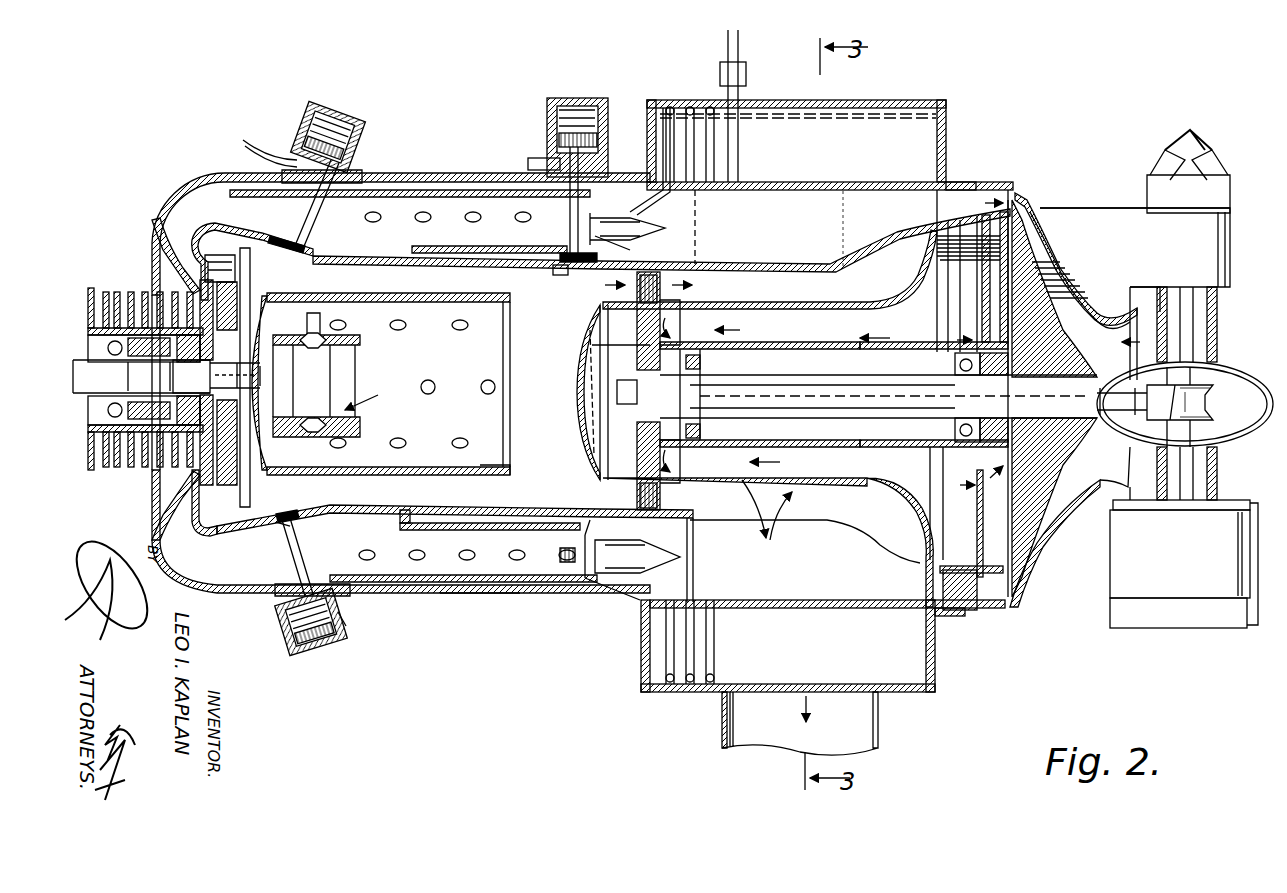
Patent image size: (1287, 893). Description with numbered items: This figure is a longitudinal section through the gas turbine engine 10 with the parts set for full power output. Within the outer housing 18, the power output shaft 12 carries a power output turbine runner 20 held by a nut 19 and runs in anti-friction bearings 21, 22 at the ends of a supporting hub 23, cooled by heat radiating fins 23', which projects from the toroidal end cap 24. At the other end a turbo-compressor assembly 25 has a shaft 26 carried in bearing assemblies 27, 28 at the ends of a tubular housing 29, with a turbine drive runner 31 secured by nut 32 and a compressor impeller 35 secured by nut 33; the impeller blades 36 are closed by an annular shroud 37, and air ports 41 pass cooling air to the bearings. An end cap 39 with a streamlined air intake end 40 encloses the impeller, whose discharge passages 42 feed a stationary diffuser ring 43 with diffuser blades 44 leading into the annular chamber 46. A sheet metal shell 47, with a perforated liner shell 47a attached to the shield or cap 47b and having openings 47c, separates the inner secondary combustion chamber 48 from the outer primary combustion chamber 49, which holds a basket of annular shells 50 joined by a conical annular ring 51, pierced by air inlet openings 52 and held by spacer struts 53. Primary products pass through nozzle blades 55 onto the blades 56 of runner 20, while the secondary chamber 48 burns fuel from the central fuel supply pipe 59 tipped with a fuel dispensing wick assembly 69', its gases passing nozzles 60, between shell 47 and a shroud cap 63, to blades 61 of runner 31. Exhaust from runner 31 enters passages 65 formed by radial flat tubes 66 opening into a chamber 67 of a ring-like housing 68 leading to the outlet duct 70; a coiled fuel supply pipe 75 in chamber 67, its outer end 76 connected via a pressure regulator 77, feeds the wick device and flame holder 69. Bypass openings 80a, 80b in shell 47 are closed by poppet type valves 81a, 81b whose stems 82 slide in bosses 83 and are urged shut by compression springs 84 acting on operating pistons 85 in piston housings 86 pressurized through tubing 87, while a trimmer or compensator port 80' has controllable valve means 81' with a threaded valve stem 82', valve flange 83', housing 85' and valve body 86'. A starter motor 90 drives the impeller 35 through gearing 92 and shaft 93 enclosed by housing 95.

The gas turbine engine 10 is at (538, 96).
The power output shaft 12 is at (141, 376).
The outer housing 18 is at (478, 594).
The nut 19 is at (236, 377).
The power output turbine runner 20 is at (200, 462).
The anti-friction bearing 21 is at (100, 340).
The anti-friction bearing 22 is at (178, 320).
The supporting hub 23 is at (145, 366).
The heat radiating fins 23' is at (94, 360).
The end cap 24 is at (168, 207).
The turbo-compressor assembly 25 is at (771, 518).
The shaft 26 is at (772, 416).
The bearing assembly 27 is at (695, 445).
The bearing assembly 28 is at (945, 455).
The tubular housing 29 is at (835, 447).
The turbine drive runner 31 is at (590, 350).
The nut 32 is at (616, 392).
The nut 33 is at (1090, 432).
The compressor impeller 35 is at (1068, 292).
The blades 36 is at (1035, 542).
The annular shroud 37 is at (1063, 255).
The end cap 39 is at (1045, 200).
The air intake end 40 is at (1112, 320).
The air ports 41 is at (680, 330).
The discharge passages 42 is at (1018, 190).
The stationary diffuser ring 43 is at (985, 200).
The diffuser blades 44 is at (940, 220).
The annular chamber 46 is at (868, 213).
The sheet metal shell 47 is at (755, 268).
The perforated liner shell 47a is at (512, 471).
The shield or cap 47b is at (260, 476).
The openings 47c is at (470, 330).
The secondary combustion chamber 48 is at (388, 384).
The primary combustion chamber 49 is at (467, 386).
The annular shells 50 is at (570, 530).
The annular ring 51 is at (680, 240).
The air inlet openings 52 is at (490, 188).
The spacer struts 53 is at (400, 522).
The blades 55 is at (175, 242).
The blades 56 is at (226, 538).
The fuel supply pipe 59 is at (308, 320).
The nozzles 60 is at (600, 290).
The blades 61 is at (700, 286).
The shroud cap 63 is at (580, 434).
The passages 65 is at (803, 528).
The flat tubes 66 is at (908, 285).
The chamber 67 is at (798, 381).
The ring-like housing 68 is at (835, 102).
The wick device and flame holder 69 is at (630, 289).
The fuel dispensing wick assembly 69' is at (372, 398).
The outlet duct 70 is at (880, 724).
The fuel supply pipe 75 is at (710, 106).
The outer end 76 is at (748, 84).
The pressure regulator 77 is at (742, 62).
The bypass opening 80a is at (328, 240).
The bypass opening 80b is at (566, 254).
The trimmer or compensator port 80' is at (269, 539).
The poppet type valve 81a is at (288, 242).
The poppet type valve 81b is at (560, 276).
The controllable valve means 81' is at (302, 524).
The stem 82 is at (436, 204).
The valve stem 82' is at (311, 557).
The boss 83 is at (311, 186).
The valve flange 83' is at (297, 579).
The compression spring 84 is at (340, 118).
The operating piston 85 is at (495, 136).
The housing 85' is at (362, 613).
The piston housing 86 is at (449, 121).
The valve body 86' is at (293, 621).
The tubing 87 is at (255, 143).
The starter motor 90 is at (1182, 625).
The gearing 92 is at (1215, 415).
The shaft 93 is at (1118, 420).
The housing 95 is at (1222, 365).